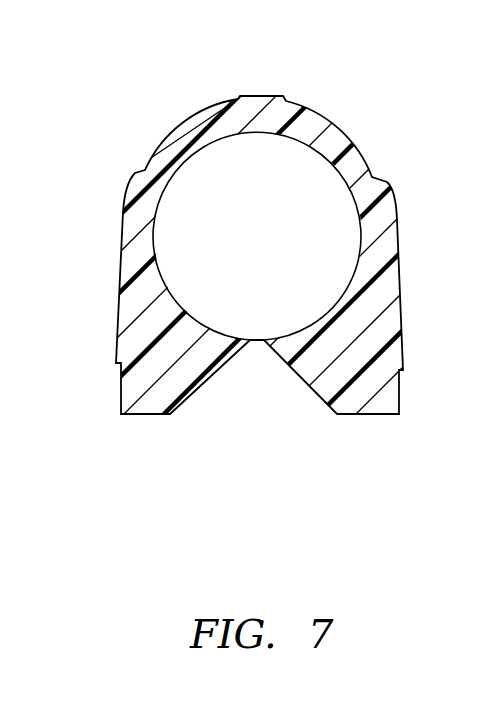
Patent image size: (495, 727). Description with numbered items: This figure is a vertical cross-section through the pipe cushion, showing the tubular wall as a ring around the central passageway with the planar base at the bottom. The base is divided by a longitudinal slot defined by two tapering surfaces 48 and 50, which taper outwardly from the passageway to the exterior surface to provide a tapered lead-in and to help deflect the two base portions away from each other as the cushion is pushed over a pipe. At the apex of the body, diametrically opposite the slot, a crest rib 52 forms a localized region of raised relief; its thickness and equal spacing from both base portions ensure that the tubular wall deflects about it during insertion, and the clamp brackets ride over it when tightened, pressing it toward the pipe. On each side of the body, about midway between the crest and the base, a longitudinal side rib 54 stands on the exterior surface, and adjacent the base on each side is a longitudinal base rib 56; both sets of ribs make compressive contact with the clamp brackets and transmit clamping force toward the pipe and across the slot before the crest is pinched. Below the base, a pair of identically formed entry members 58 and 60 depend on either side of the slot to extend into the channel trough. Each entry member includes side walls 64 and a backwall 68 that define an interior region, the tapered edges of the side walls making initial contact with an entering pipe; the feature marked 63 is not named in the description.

The tapering surface 48 is at (242, 355).
The tapering surface 50 is at (275, 362).
The crest rib 52 is at (270, 95).
The longitudinal side rib 54 is at (124, 182).
The longitudinal base rib 56 is at (116, 346).
The entry member 58 is at (400, 418).
The entry member 60 is at (121, 414).
The sloped surfaces 63 is at (200, 396).
The side wall 64 is at (181, 416).
The backwall 68 is at (120, 398).